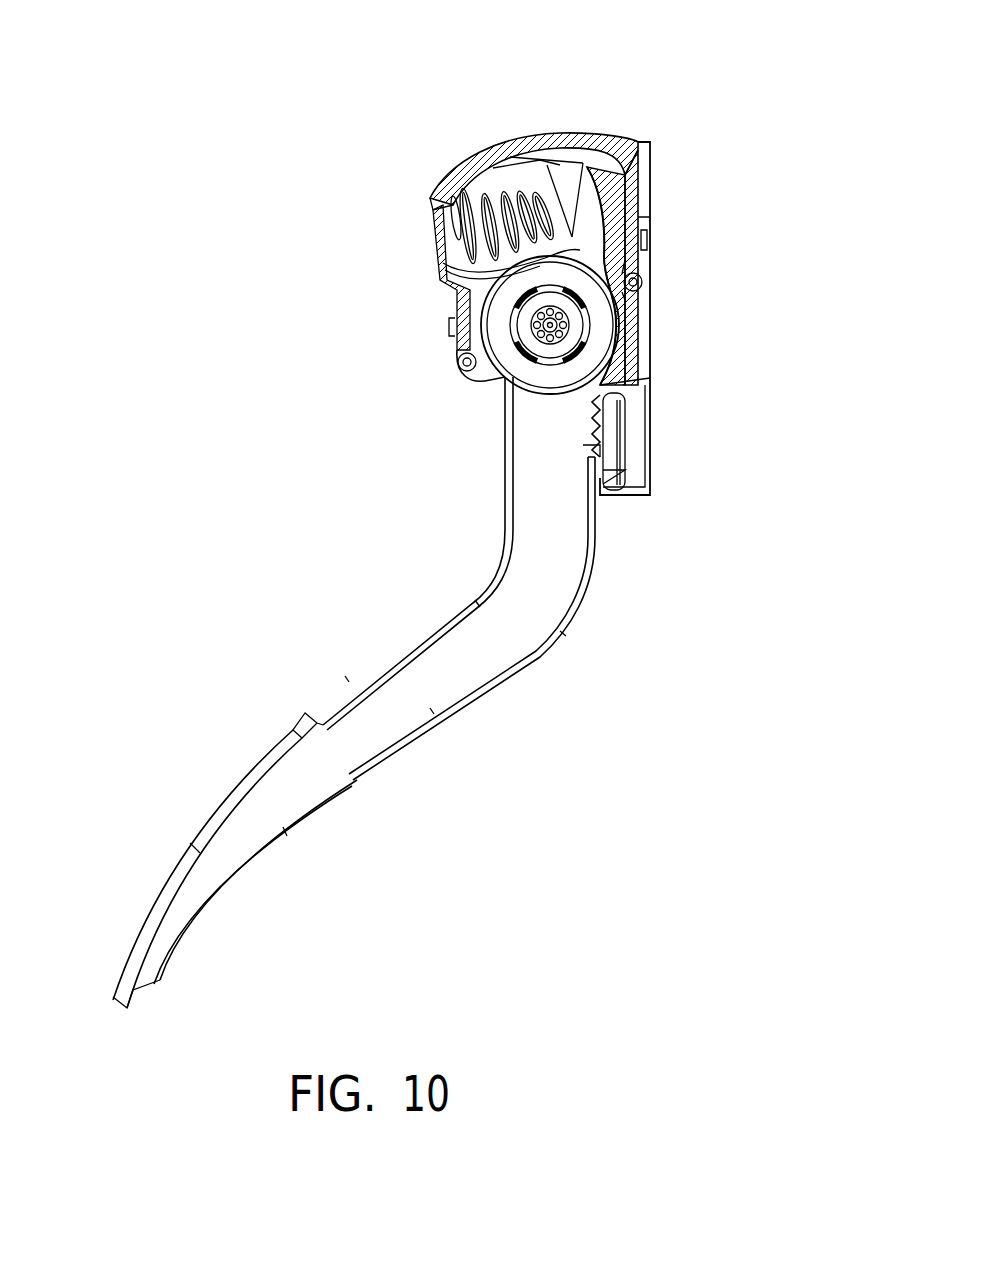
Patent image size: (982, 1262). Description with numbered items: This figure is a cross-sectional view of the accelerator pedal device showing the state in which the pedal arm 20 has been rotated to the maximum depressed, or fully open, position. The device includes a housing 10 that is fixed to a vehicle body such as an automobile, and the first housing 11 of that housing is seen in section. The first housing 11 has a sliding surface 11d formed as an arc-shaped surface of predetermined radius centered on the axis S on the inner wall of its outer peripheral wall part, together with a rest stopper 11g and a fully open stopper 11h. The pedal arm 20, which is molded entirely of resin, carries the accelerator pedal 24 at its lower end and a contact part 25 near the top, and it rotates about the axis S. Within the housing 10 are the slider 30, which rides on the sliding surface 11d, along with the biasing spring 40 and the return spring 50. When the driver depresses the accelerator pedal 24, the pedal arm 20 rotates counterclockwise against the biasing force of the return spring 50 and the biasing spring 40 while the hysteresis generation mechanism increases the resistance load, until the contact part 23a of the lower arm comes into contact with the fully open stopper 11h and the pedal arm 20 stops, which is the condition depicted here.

The housing 10 is at (595, 252).
The first housing 11 is at (595, 252).
The sliding surface 11d is at (605, 157).
The rest stopper 11g is at (620, 197).
The fully open stopper 11h is at (603, 417).
The pedal arm 20 is at (457, 615).
The contact part 23a is at (622, 448).
The accelerator pedal 24 is at (253, 762).
The contact part 25 is at (582, 190).
The slider 30 is at (487, 175).
The biasing spring 40 is at (470, 215).
The return spring 50 is at (472, 198).
The axis S is at (587, 322).